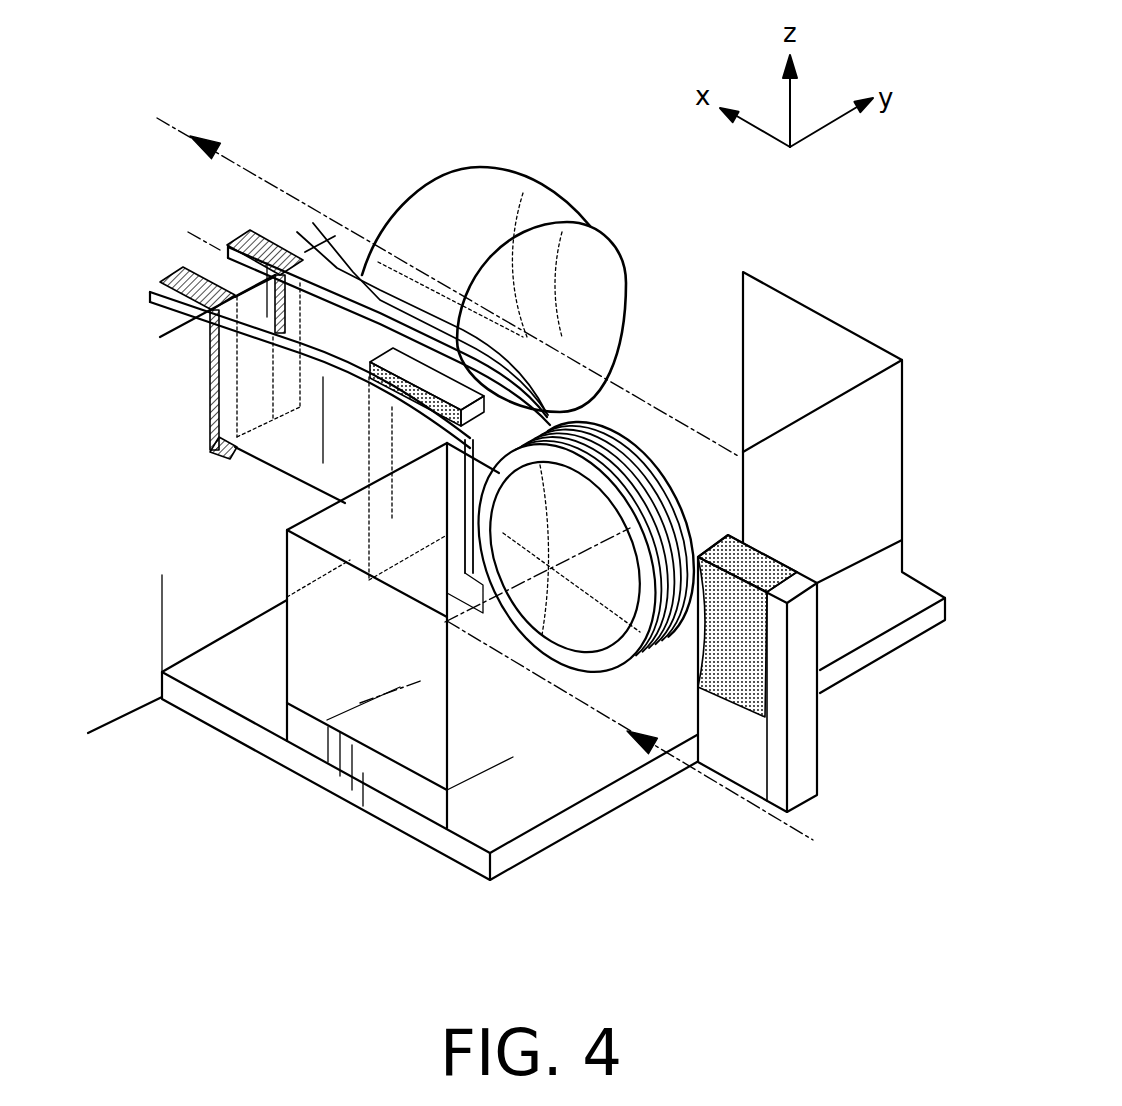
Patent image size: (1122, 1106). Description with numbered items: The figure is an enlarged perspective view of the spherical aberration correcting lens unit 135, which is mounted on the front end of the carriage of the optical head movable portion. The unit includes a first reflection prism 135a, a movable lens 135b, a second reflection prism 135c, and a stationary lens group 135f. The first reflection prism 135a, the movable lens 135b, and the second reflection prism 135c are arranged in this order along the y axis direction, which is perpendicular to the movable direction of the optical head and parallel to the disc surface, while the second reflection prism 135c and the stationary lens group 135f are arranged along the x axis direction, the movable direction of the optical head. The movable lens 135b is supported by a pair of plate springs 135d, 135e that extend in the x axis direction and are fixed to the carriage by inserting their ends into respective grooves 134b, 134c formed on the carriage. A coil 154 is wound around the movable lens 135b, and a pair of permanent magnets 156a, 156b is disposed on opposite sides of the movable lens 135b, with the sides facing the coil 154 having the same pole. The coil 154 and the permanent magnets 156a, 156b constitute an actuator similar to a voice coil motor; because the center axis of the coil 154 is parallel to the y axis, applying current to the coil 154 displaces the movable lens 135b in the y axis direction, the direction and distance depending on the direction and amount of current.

The spherical aberration correcting lens unit 135 is at (496, 104).
The first reflection prism 135a is at (317, 668).
The movable lens 135b is at (587, 638).
The second reflection prism 135c is at (828, 343).
The plate spring 135d is at (313, 458).
The plate spring 135e is at (325, 300).
The stationary lens group 135f is at (543, 212).
The groove 134b is at (173, 285).
The groove 134c is at (257, 227).
The coil 154 is at (640, 463).
The permanent magnet 156a is at (770, 575).
The permanent magnet 156b is at (442, 415).